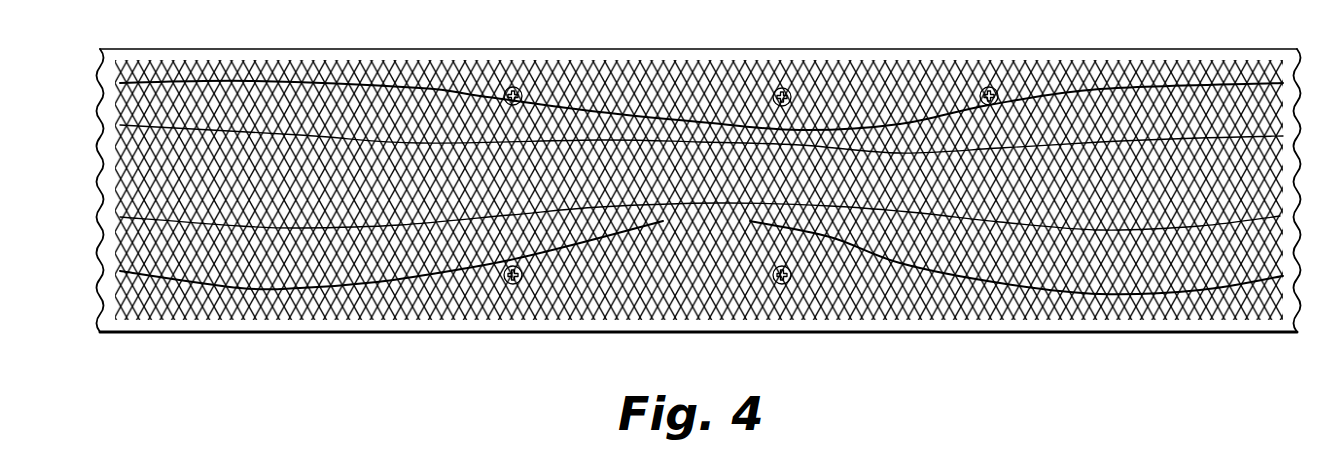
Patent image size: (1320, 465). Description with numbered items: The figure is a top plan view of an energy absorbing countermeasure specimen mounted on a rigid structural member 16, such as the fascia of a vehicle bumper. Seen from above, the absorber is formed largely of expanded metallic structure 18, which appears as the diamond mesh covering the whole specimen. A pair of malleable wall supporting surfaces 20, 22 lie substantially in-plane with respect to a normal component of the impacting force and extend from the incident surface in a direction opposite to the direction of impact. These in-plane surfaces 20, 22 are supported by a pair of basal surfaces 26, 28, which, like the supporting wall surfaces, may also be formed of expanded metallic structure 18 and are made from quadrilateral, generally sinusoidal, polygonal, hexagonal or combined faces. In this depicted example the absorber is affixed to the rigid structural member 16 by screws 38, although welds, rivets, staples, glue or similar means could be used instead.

The rigid structural member 16 is at (550, 335).
The expanded metallic structure 18 is at (418, 87).
The malleable wall supporting surface 20 is at (715, 220).
The malleable wall supporting surface 22 is at (700, 120).
The basal surface 26 is at (872, 293).
The basal surface 28 is at (913, 98).
The screw 38 is at (783, 280).